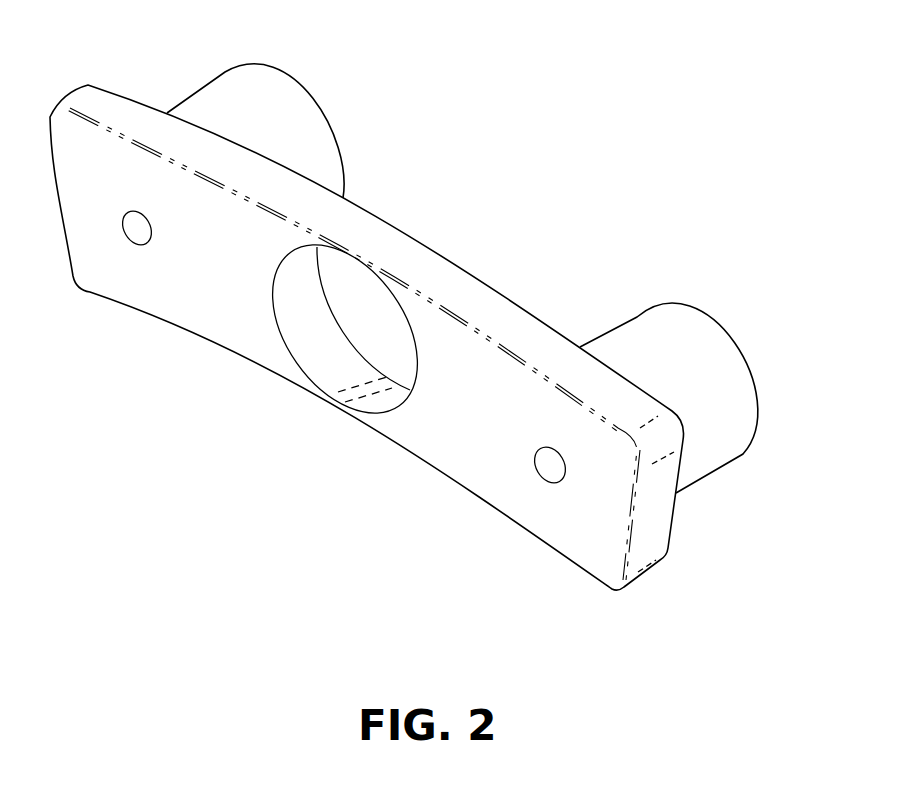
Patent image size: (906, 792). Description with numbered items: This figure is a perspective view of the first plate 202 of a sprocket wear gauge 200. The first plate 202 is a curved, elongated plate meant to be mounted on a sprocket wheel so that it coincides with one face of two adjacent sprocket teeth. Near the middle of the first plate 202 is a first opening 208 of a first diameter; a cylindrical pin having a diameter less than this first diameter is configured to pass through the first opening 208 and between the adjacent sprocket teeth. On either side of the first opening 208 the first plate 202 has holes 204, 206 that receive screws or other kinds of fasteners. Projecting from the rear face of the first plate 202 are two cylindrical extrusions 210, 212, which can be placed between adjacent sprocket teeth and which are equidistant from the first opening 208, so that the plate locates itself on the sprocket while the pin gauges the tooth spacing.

The sprocket wear gauge 200 is at (411, 313).
The first plate 202 is at (212, 306).
The hole 204 is at (138, 229).
The hole 206 is at (548, 468).
The first opening 208 is at (348, 367).
The cylindrical extrusion 210 is at (703, 340).
The cylindrical extrusion 212 is at (280, 86).